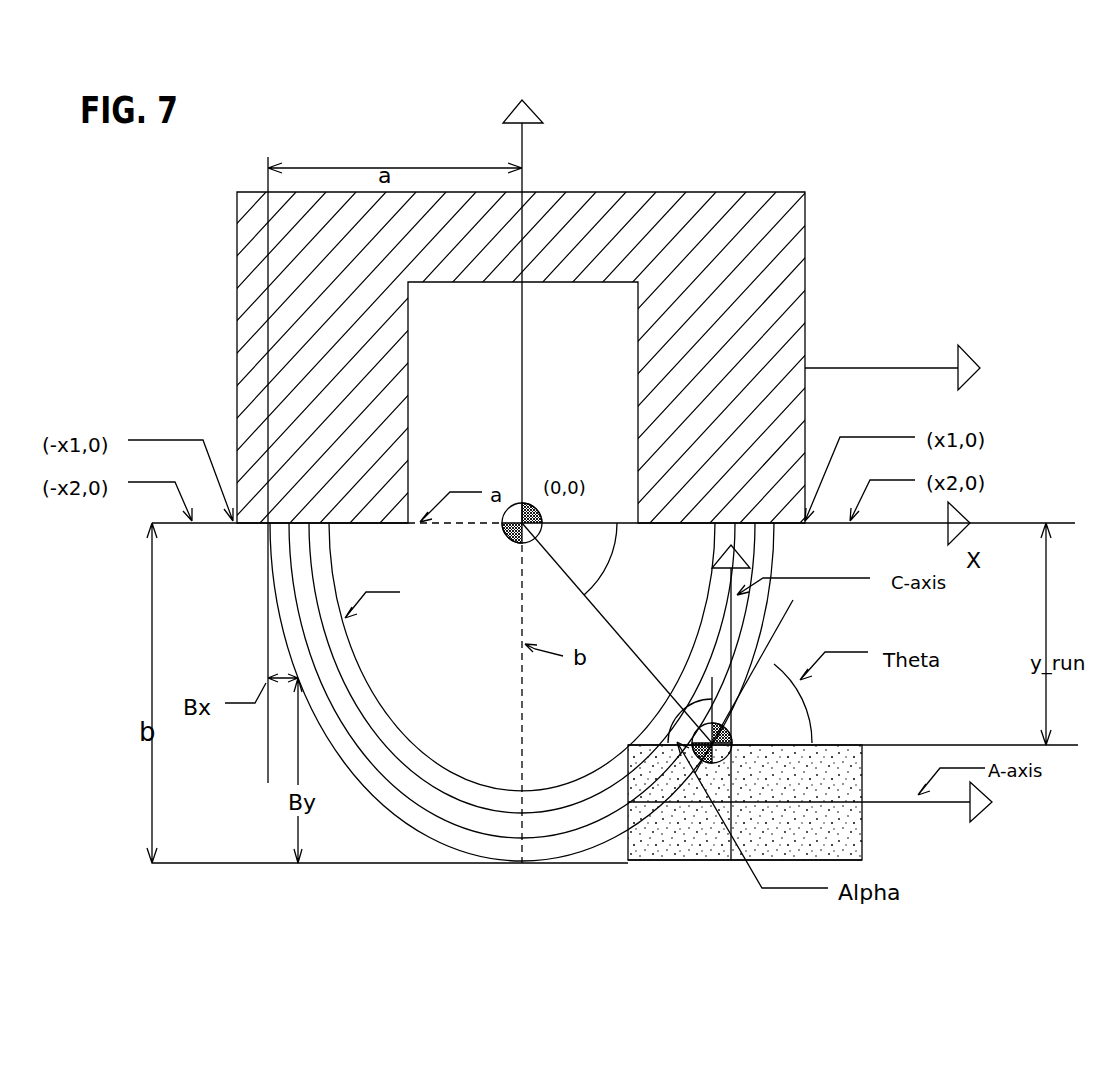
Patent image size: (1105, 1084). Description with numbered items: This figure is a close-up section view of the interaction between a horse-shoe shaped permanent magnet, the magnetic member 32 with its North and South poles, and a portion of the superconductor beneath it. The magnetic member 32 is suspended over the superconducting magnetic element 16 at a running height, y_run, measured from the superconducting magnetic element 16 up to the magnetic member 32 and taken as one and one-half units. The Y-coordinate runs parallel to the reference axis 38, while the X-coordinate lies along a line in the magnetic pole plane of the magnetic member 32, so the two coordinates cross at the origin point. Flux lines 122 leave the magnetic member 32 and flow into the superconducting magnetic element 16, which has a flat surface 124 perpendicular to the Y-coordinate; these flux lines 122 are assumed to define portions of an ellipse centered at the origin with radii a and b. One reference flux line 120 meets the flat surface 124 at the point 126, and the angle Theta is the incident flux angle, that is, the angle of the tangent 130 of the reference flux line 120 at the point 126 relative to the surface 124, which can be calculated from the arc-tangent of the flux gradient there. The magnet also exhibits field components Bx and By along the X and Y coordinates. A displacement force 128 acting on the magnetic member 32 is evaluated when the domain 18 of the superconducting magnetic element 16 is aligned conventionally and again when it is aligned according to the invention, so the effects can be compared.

The magnetic member 32 is at (797, 190).
The reference axis 38 is at (522, 143).
The displacement force 128 is at (843, 368).
The tangent 130 is at (793, 600).
The point 126 is at (802, 678).
The flat surface 124 is at (830, 745).
The domain 18 is at (847, 823).
The superconducting magnetic element 16 is at (675, 860).
The reference flux line 120 is at (367, 787).
The flux lines 122 is at (397, 722).